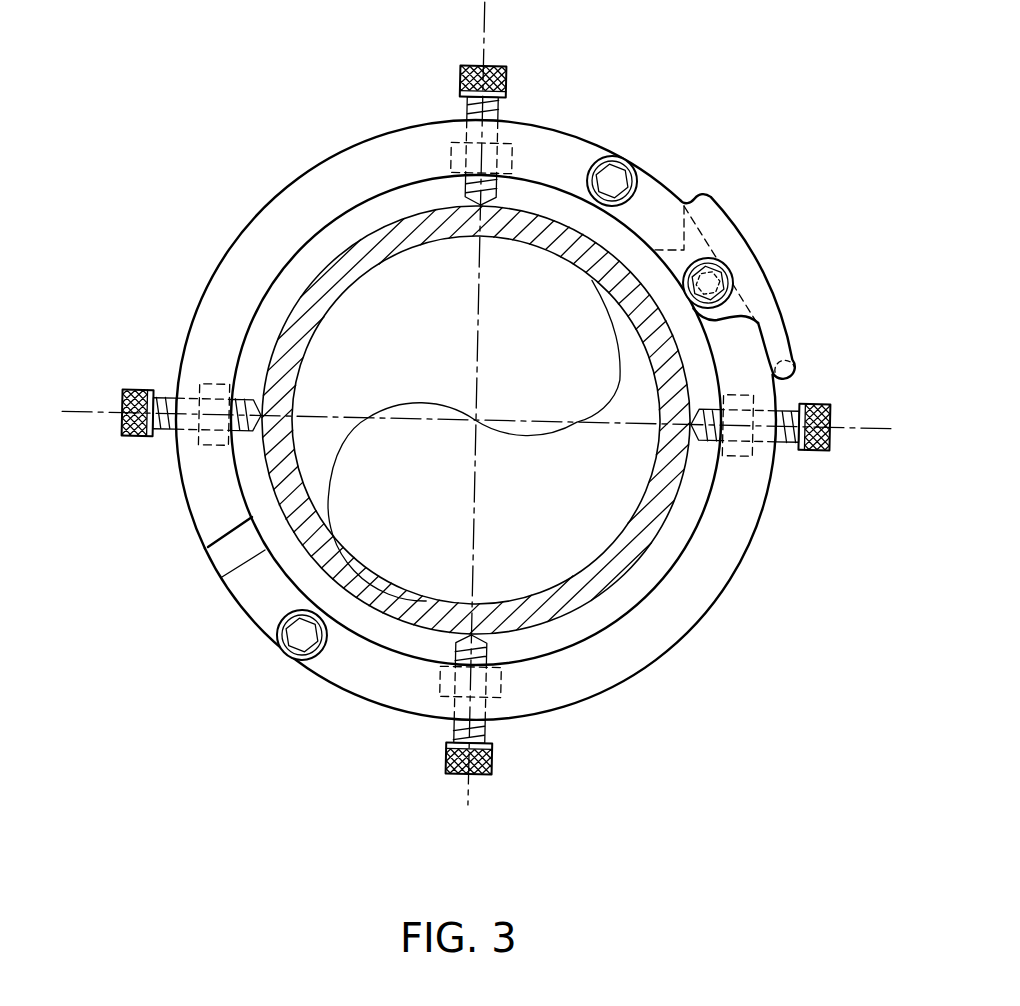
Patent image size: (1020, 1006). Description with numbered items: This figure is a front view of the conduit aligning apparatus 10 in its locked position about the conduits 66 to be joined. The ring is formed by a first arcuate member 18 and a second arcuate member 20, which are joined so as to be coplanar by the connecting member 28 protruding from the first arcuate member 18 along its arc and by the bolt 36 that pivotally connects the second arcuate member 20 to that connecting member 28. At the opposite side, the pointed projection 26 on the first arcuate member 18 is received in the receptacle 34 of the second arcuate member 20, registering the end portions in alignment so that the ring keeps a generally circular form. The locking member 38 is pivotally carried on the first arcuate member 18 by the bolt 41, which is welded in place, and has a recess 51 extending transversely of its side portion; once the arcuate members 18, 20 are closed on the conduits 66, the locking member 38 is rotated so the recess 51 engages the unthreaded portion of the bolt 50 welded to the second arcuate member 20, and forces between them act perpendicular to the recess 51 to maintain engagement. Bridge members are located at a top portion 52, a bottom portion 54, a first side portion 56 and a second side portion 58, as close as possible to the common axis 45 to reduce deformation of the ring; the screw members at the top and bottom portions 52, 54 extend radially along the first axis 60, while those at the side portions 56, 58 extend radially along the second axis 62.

The apparatus for aligning conduits 10 is at (618, 86).
The first arcuate member 18 is at (247, 238).
The second arcuate member 20 is at (682, 618).
The pointed projection 26 is at (673, 235).
The connecting member 28 is at (246, 593).
The receptacle 34 is at (693, 237).
The bolt 36 is at (300, 637).
The locking member 38 is at (745, 235).
The bolt 41 is at (612, 180).
The common axis 45 is at (476, 420).
The bolt 50 is at (712, 284).
The recess 51 is at (745, 320).
The top portion 52 is at (529, 113).
The bottom portion 54 is at (547, 713).
The first side portion 56 is at (178, 463).
The second side portion 58 is at (773, 465).
The first axis 60 is at (483, 14).
The second axis 62 is at (75, 411).
The conduits 66 is at (362, 232).